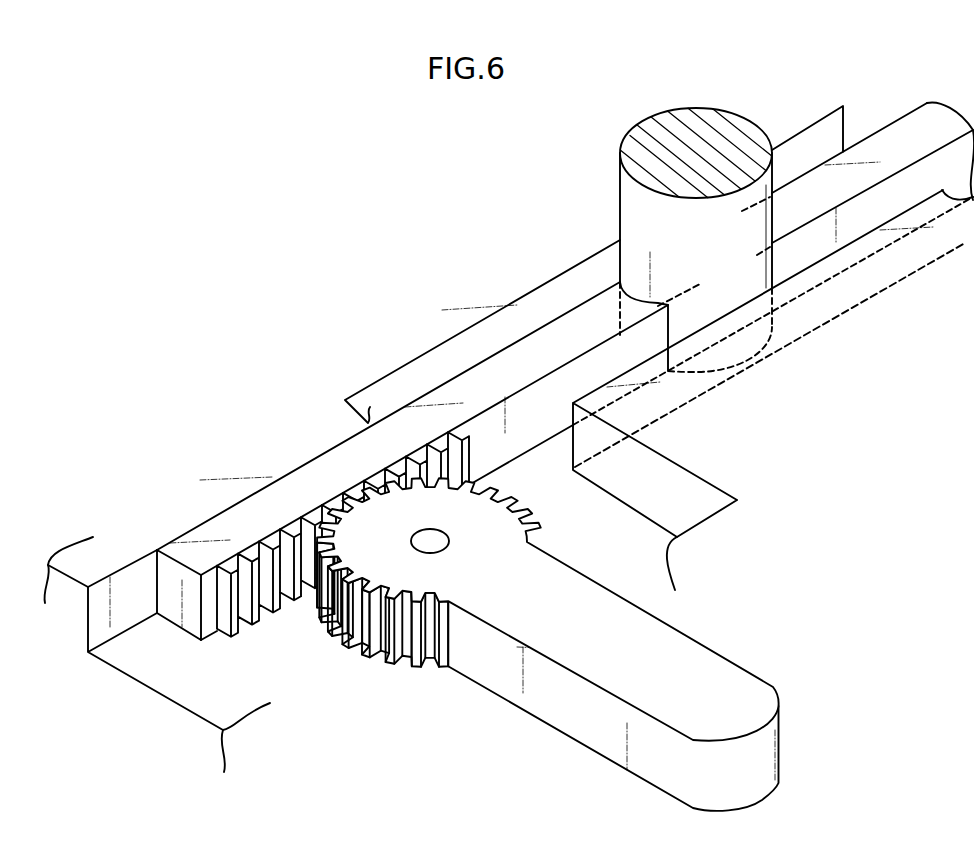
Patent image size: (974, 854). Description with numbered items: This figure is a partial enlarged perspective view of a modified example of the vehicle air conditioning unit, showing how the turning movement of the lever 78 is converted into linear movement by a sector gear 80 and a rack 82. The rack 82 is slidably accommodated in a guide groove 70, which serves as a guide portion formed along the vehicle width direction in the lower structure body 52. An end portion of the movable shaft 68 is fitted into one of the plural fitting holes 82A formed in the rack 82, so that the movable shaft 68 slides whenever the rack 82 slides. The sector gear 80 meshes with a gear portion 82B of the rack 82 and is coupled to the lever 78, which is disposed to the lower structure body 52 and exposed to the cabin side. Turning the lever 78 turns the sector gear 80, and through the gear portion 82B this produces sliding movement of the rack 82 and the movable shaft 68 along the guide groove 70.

The lower structure body 52 is at (143, 693).
The movable shaft 68 is at (688, 128).
The guide groove 70 is at (808, 152).
The lever 78 is at (723, 680).
The sector gear 80 is at (478, 537).
The rack 82 is at (460, 388).
The fitting hole 82A is at (657, 293).
The gear portion 82B is at (310, 527).